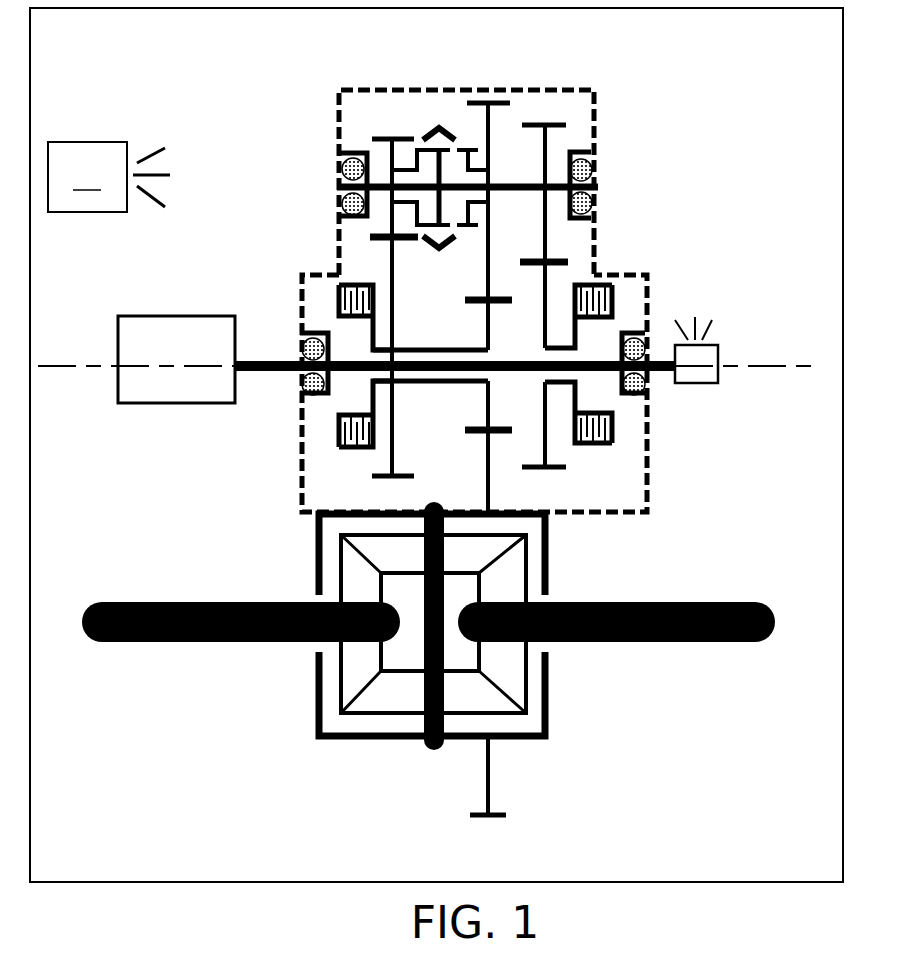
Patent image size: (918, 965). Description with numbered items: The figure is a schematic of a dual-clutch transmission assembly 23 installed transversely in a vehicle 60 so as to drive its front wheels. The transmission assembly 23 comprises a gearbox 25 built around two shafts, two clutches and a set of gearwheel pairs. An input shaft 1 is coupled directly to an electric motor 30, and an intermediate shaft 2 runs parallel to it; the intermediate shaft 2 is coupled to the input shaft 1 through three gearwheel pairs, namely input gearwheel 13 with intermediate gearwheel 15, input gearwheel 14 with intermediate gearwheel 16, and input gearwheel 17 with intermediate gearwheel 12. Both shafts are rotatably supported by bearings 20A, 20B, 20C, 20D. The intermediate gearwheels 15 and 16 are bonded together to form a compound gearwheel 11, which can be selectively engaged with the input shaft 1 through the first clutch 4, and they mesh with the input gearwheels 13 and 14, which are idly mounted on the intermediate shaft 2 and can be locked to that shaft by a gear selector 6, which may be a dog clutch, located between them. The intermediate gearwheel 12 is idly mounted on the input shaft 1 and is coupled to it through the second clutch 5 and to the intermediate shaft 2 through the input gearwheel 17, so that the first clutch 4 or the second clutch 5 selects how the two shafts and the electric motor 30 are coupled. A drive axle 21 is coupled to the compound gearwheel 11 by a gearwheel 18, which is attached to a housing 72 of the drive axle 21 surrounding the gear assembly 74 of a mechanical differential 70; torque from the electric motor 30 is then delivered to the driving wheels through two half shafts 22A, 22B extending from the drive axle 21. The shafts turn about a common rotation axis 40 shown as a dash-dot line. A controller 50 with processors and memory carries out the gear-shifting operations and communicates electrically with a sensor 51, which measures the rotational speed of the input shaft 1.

The input shaft 1 is at (270, 358).
The intermediate shaft 2 is at (382, 181).
The first clutch 4 is at (362, 285).
The second clutch 5 is at (592, 287).
The gear selector 6 is at (439, 126).
The compound gearwheel 11 is at (418, 392).
The intermediate gearwheel 12 is at (546, 435).
The input gearwheel 13 is at (392, 137).
The input gearwheel 14 is at (488, 102).
The intermediate gearwheel 15 is at (393, 280).
The intermediate gearwheel 16 is at (488, 327).
The input gearwheel 17 is at (545, 124).
The gearwheel 18 is at (487, 797).
The bearing 20A is at (303, 384).
The bearing 20B is at (643, 333).
The bearing 20C is at (356, 204).
The bearing 20D is at (583, 152).
The drive axle 21 is at (300, 552).
The half shaft 22A is at (228, 600).
The half shaft 22B is at (700, 600).
The dual-clutch transmission assembly 23 is at (330, 188).
The gearbox 25 is at (634, 197).
The electric motor 30 is at (173, 316).
The rotation axis 40 is at (788, 362).
The controller 50 is at (109, 177).
The sensor 51 is at (695, 385).
The vehicle 60 is at (657, 882).
The mechanical differential 70 is at (315, 660).
The housing 72 is at (315, 725).
The gear assembly 74 is at (352, 678).